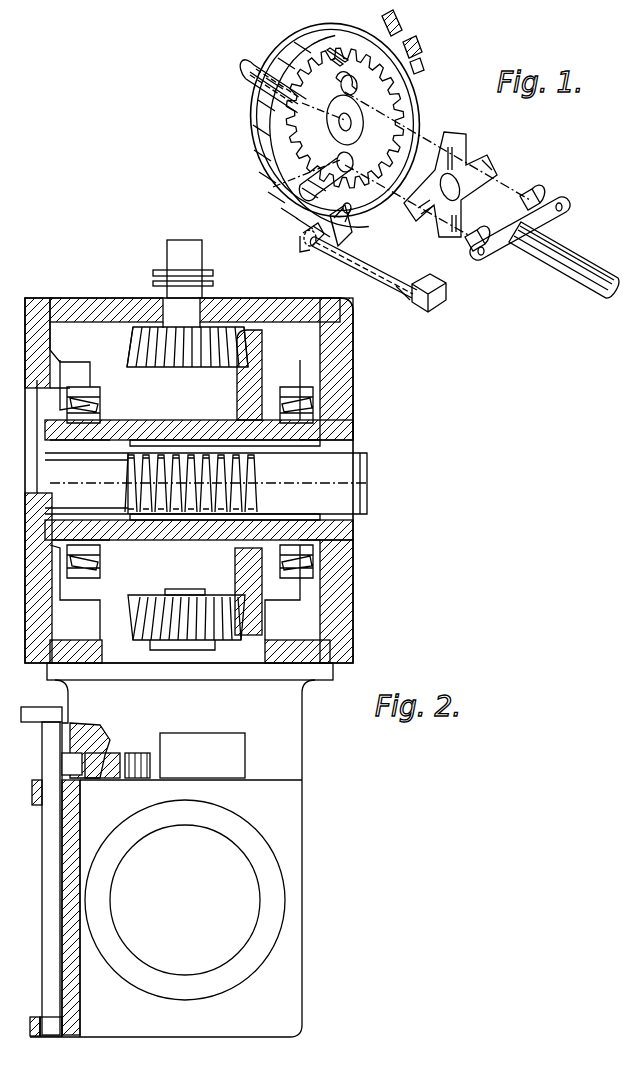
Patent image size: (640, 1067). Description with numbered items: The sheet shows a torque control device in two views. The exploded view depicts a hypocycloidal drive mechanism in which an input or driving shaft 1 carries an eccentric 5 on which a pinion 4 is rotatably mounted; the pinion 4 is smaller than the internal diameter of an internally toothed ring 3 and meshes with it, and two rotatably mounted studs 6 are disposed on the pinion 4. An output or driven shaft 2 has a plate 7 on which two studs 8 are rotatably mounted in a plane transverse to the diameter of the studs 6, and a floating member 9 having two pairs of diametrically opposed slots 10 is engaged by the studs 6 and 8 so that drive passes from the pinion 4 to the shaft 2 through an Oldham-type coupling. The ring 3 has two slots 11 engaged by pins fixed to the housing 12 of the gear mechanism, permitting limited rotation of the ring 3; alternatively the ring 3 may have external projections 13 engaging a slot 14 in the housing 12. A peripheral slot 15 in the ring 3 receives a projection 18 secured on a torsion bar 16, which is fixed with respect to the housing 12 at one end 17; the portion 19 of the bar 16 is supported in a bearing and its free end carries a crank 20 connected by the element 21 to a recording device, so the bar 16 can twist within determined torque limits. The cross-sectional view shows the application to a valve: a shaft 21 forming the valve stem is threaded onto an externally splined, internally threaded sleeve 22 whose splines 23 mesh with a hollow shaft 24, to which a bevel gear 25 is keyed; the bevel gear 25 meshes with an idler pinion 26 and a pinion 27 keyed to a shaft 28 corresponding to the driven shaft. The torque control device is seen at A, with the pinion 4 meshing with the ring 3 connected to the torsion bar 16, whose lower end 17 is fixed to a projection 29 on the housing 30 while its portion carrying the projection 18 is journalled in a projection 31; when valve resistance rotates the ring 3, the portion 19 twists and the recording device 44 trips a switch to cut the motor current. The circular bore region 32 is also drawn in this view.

In FIG. 1, the input shaft 1 is at (248, 84).
In FIG. 1, the output shaft 2 is at (575, 262).
In FIG. 1, the internally toothed ring 3 is at (268, 137).
In FIG. 1, the pinion 4 is at (305, 90).
In FIG. 2, the pinion 4 is at (142, 760).
In FIG. 1, the eccentric 5 is at (335, 124).
In FIG. 2, the eccentric 5 is at (110, 760).
In FIG. 1, the studs 6 is at (342, 80).
In FIG. 1, the plate 7 is at (505, 250).
In FIG. 1, the studs 8 is at (536, 192).
In FIG. 1, the floating member 9 is at (478, 162).
In FIG. 1, the slots 10 is at (448, 170).
In FIG. 1, the slots 11 is at (338, 60).
In FIG. 1, the housing 12 is at (423, 68).
In FIG. 1, the external projections 13 is at (421, 48).
In FIG. 1, the slot 14 is at (401, 26).
In FIG. 1, the slot 15 is at (350, 206).
In FIG. 1, the torsion bar 16 is at (390, 248).
In FIG. 2, the torsion bar 16 is at (46, 843).
In FIG. 1, the fixed end 17 is at (436, 308).
In FIG. 2, the fixed end 17 is at (50, 1024).
In FIG. 1, the projection 18 is at (338, 246).
In FIG. 2, the projection 18 is at (78, 740).
In FIG. 1, the bar portion 19 is at (400, 290).
In FIG. 2, the bar portion 19 is at (45, 888).
In FIG. 1, the crank 20 is at (304, 234).
In FIG. 2, the crank 20 is at (36, 720).
In FIG. 1, the shaft 21 is at (300, 248).
In FIG. 2, the shaft 21 is at (355, 487).
In FIG. 2, the sleeve 22 is at (262, 508).
In FIG. 2, the splines 23 is at (218, 540).
In FIG. 2, the hollow shaft 24 is at (162, 425).
In FIG. 2, the bevel gear 25 is at (262, 360).
In FIG. 2, the idler bevel pinion 26 is at (140, 352).
In FIG. 2, the bevel pinion 27 is at (130, 620).
In FIG. 2, the shaft 28 is at (180, 590).
In FIG. 2, the projection 29 is at (32, 1030).
In FIG. 2, the housing 30 is at (62, 1024).
In FIG. 2, the projection 31 is at (34, 804).
In FIG. 2, the bore 32 is at (260, 865).
In FIG. 2, the recording device 44 is at (220, 745).
In FIG. 2, the torque control device A is at (290, 762).